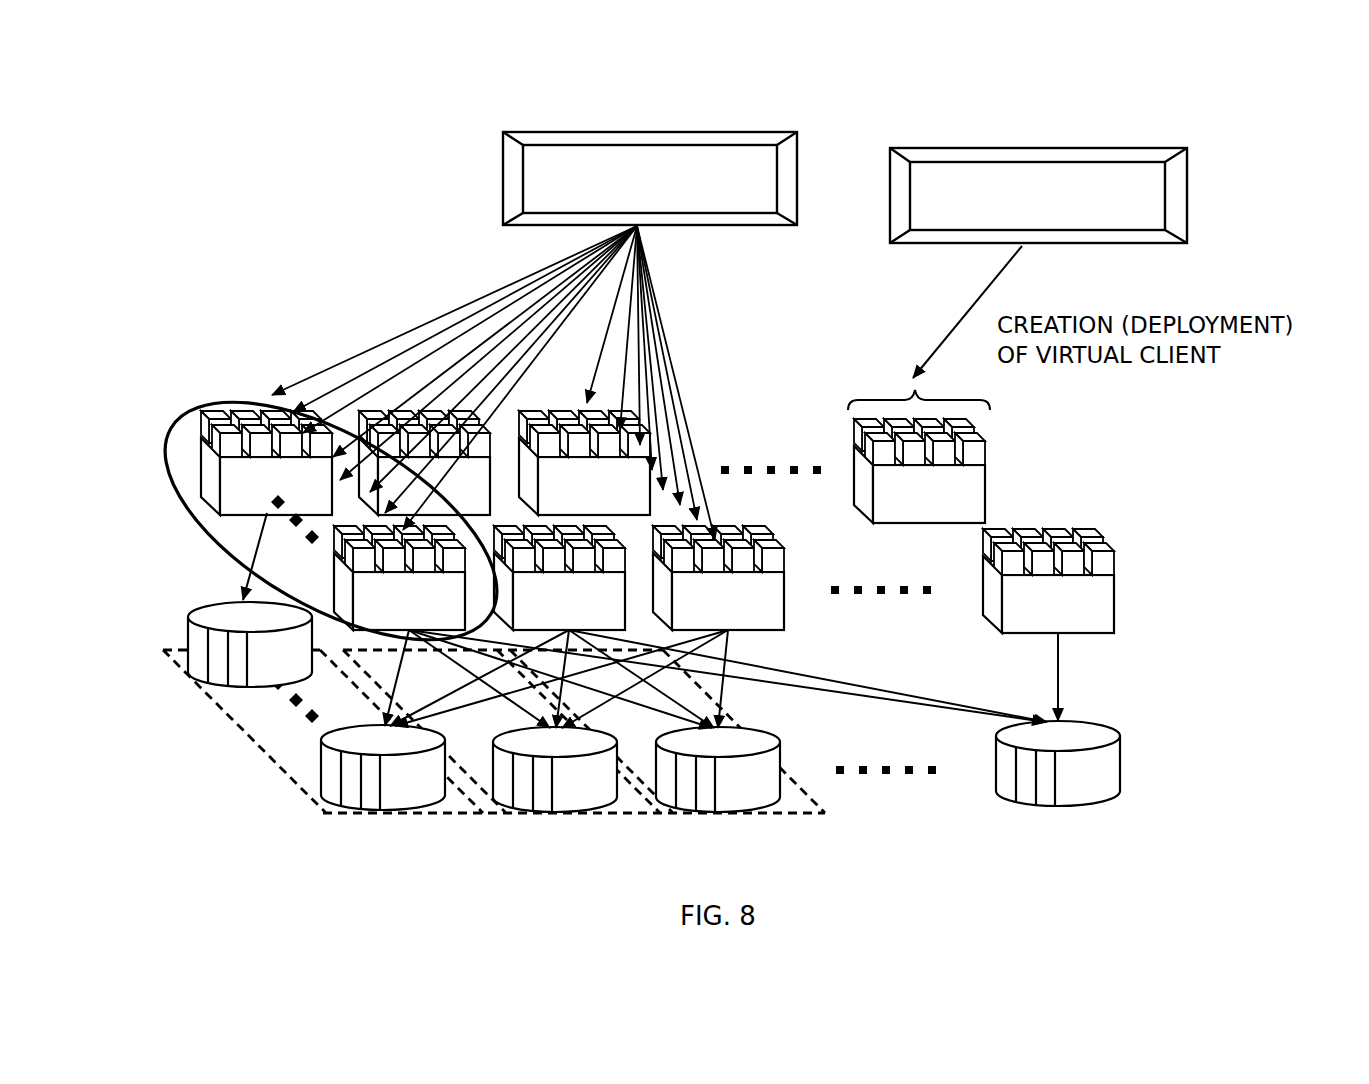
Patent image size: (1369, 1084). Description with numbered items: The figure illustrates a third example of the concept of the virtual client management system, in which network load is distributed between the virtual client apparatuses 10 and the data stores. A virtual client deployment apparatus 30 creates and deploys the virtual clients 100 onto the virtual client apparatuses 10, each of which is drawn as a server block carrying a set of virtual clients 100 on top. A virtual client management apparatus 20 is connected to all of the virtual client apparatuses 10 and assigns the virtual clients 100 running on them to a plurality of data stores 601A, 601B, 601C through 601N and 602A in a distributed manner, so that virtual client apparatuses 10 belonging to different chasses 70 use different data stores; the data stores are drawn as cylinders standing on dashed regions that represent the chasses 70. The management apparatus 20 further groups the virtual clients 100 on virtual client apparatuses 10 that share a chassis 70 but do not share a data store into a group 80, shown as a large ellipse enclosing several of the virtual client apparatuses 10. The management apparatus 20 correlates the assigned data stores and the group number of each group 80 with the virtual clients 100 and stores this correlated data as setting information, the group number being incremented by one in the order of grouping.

The virtual client apparatus 10 is at (233, 497).
The virtual client management apparatus 20 is at (700, 131).
The virtual client deployment apparatus 30 is at (1016, 148).
The chassis 70 is at (250, 738).
The group 80 is at (168, 432).
The virtual client 100 is at (244, 410).
The data store 602A is at (188, 621).
The data store 601A is at (310, 790).
The data store 601B is at (592, 778).
The data store 601C is at (755, 778).
The data store 601N is at (1080, 786).